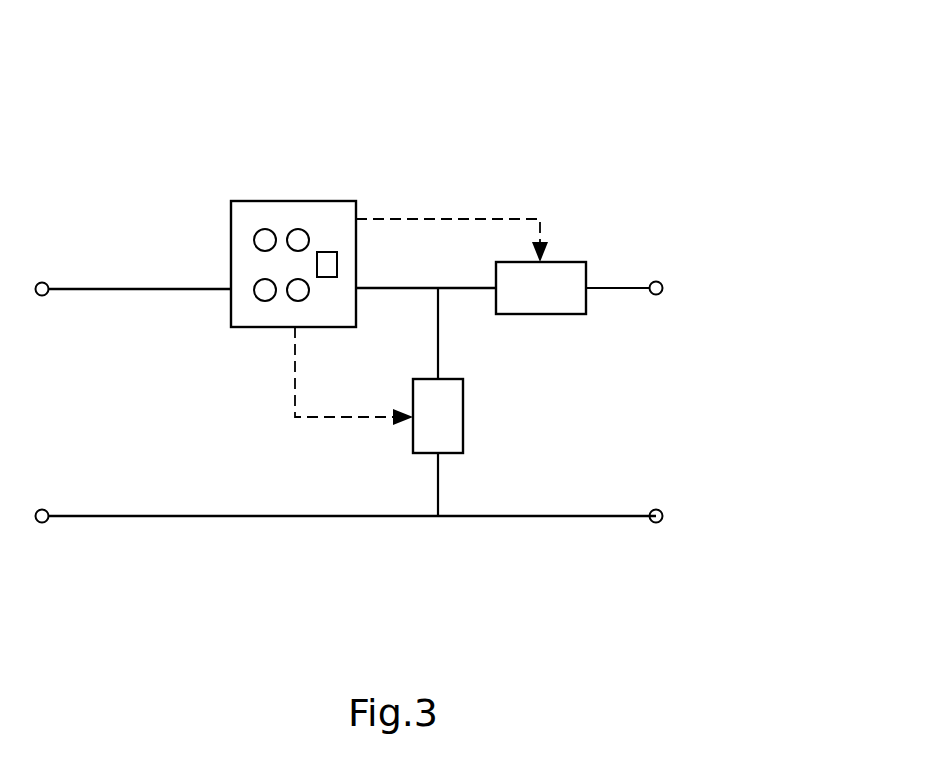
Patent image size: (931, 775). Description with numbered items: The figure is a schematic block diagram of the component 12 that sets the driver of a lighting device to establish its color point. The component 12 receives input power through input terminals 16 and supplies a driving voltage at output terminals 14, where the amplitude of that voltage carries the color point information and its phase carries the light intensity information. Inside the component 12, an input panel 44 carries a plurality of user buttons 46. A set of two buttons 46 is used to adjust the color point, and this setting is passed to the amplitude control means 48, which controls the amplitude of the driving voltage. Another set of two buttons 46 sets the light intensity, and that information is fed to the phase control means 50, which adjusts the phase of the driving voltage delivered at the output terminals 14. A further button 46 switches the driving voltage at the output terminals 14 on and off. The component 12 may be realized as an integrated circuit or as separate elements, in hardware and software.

The component 12 is at (708, 133).
The output terminals 14 is at (661, 282).
The input terminals 16 is at (118, 288).
The input panel 44 is at (258, 201).
The user buttons 46 is at (302, 230).
The amplitude control means 48 is at (577, 262).
The phase control means 50 is at (463, 438).